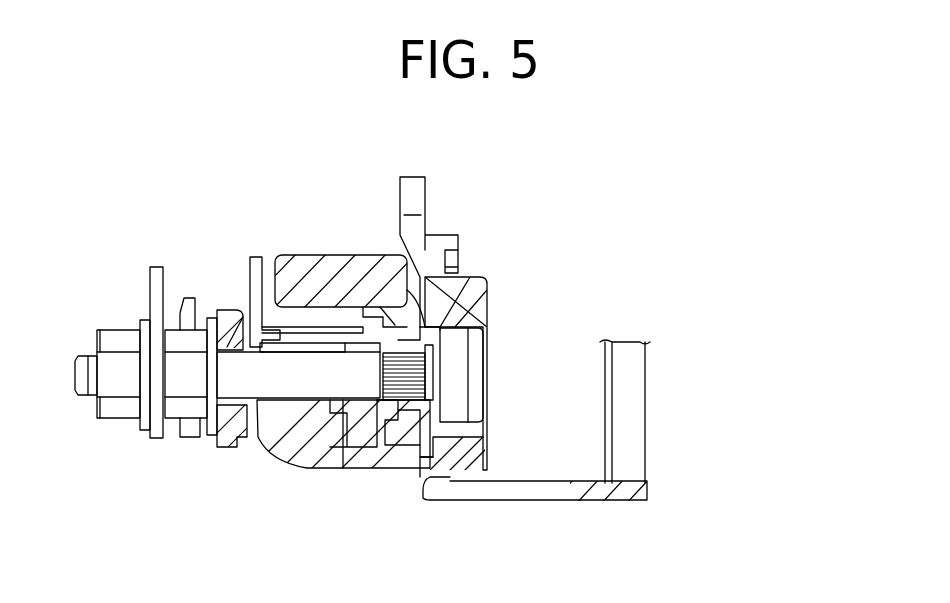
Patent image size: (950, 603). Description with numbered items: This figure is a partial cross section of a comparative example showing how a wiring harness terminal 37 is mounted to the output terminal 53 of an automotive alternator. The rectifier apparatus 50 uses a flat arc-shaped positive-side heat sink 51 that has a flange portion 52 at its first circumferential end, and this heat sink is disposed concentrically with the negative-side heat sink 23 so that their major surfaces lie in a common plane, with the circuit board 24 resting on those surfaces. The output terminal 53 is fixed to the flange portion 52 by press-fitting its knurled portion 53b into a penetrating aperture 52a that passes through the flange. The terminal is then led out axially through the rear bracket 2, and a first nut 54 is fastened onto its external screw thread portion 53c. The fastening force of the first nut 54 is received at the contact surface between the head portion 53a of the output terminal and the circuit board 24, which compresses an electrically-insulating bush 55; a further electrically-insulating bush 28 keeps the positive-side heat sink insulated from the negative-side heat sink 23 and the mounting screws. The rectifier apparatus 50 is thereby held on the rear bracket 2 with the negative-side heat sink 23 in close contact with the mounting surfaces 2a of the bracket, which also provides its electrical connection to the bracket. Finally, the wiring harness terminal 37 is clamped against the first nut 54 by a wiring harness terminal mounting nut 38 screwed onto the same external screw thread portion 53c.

The rear bracket 2 is at (539, 503).
The mounting surfaces 2a is at (305, 463).
The negative-side heat sink 23 is at (370, 448).
The circuit board 24 is at (487, 280).
The electrically-insulating bush 28 is at (385, 410).
The wiring harness terminal 37 is at (152, 272).
The wiring harness terminal mounting nut 38 is at (115, 336).
The rectifier apparatus 50 is at (493, 313).
The positive-side heat sink 51 is at (343, 254).
The flange portion 52 is at (372, 253).
The penetrating aperture 52a is at (393, 414).
The output terminal 53 is at (459, 380).
The head portion 53a is at (463, 350).
The knurled portion 53b is at (434, 384).
The external screw thread portion 53c is at (80, 398).
The first nut 54 is at (185, 340).
The electrically-insulating bush 55 is at (233, 312).